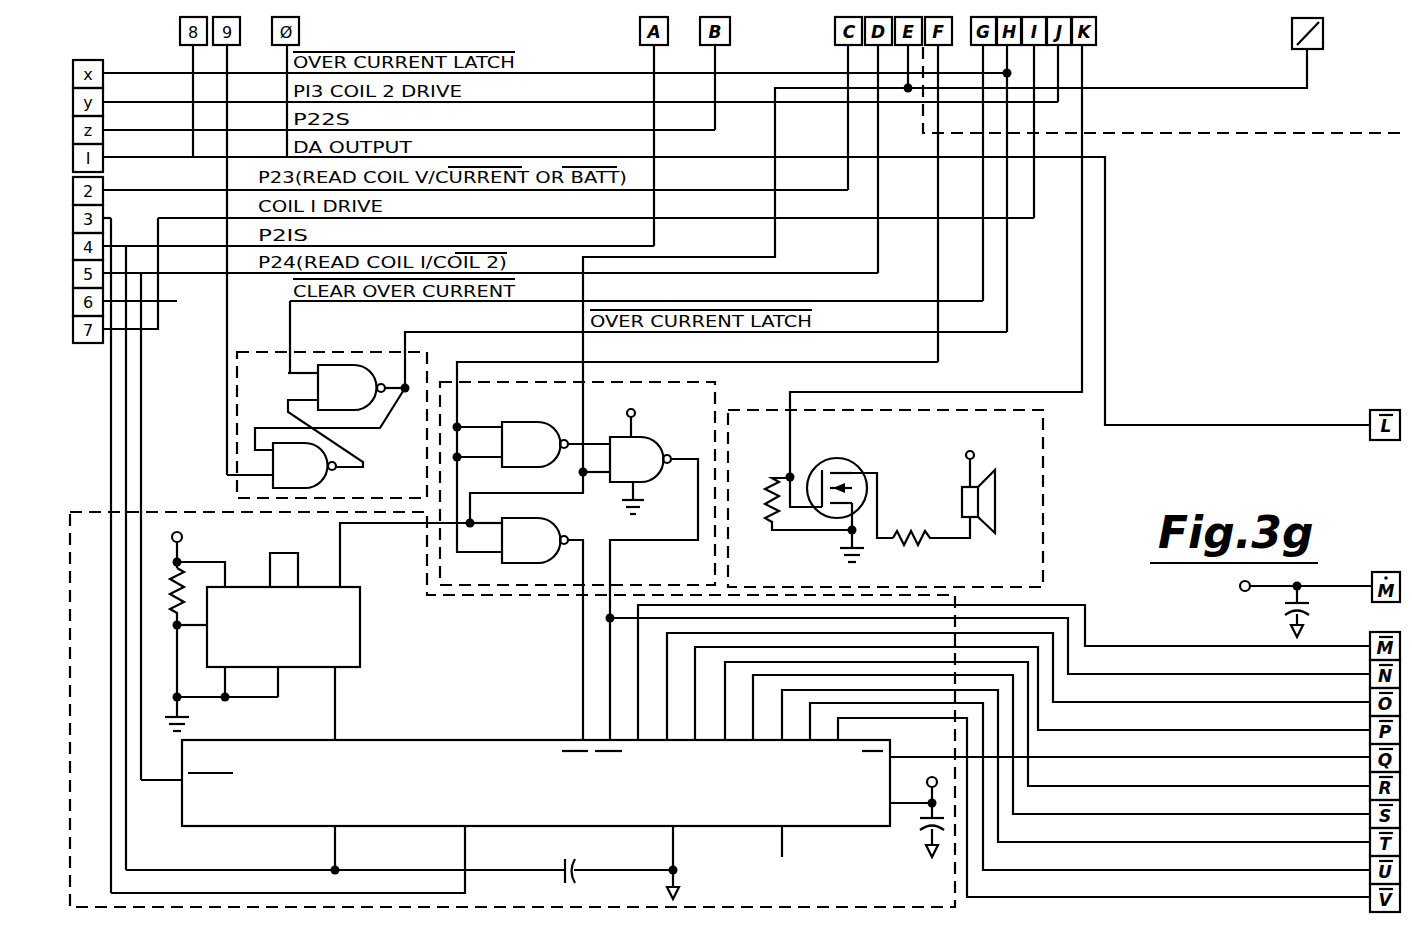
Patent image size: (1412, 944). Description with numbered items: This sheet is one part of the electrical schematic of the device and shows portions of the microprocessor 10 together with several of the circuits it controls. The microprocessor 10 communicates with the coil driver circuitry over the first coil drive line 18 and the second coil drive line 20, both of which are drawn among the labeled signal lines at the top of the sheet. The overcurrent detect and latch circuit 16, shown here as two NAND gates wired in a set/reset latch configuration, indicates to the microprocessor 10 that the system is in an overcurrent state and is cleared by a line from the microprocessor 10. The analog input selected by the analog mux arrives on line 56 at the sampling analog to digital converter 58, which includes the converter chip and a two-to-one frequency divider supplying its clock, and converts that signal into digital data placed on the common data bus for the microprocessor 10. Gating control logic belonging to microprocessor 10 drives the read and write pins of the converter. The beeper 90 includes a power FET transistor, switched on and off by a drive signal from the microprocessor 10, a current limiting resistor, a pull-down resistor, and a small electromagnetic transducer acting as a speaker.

The microprocessor 10 is at (718, 392).
The overcurrent detect and latch circuit 16 is at (274, 352).
The first coil drive line 18 is at (810, 219).
The second coil drive line 20 is at (579, 100).
The line 56 is at (110, 438).
The sampling analog to digital converter 58 is at (205, 511).
The beeper 90 is at (1043, 485).